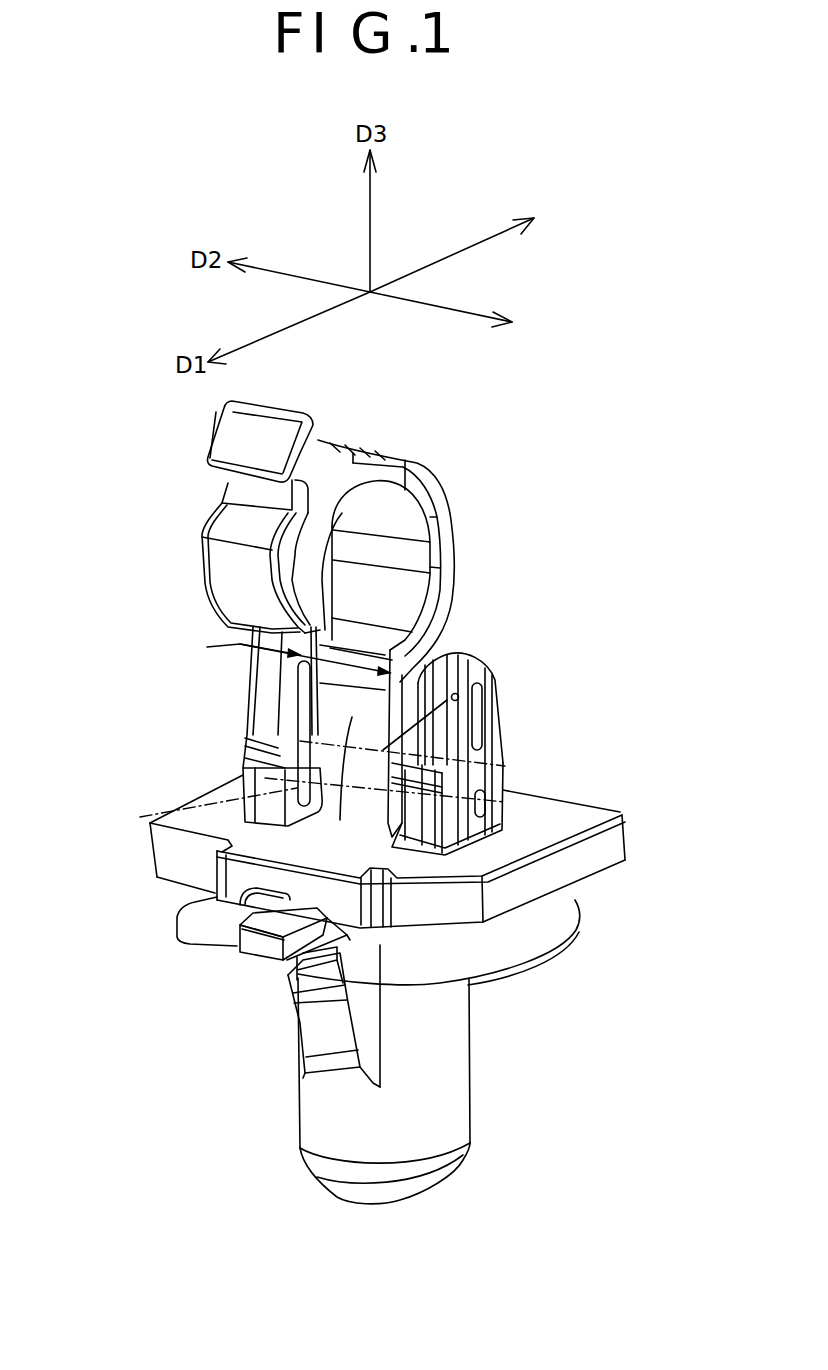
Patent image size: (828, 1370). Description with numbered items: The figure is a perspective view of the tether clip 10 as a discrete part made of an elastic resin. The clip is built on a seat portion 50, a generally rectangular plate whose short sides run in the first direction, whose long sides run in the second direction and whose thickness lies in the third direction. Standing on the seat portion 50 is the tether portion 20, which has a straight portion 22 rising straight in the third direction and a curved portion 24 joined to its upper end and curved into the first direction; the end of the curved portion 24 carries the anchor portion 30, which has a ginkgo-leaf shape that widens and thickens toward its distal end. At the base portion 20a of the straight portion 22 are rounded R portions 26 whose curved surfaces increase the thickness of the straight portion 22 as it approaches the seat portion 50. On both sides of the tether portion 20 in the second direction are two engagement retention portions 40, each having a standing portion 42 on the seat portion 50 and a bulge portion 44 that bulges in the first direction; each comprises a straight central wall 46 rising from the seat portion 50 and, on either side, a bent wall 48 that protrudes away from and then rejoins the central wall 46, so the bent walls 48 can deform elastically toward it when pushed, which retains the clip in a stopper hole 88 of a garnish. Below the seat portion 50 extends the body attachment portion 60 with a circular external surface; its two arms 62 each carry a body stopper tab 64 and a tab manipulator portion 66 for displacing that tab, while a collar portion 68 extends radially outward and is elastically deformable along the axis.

The tether clip 10 is at (475, 509).
The tether portion 20 is at (558, 597).
The base portion 20a is at (190, 880).
The straight portion 22 is at (352, 717).
The curved portion 24 is at (390, 592).
The rounded portion (R portion) 26 is at (427, 720).
The anchor portion 30 is at (237, 437).
The engagement retention portion 40 is at (167, 703).
The standing portion 42 is at (270, 783).
The bulge portion 44 is at (242, 724).
The central wall 46 is at (505, 814).
The bent wall 48 is at (440, 822).
The seat portion 50 is at (577, 817).
The body attachment portion 60 is at (305, 1130).
The arm 62 is at (322, 1046).
The body stopper tab 64 is at (297, 990).
The tab manipulator portion 66 is at (257, 950).
The collar portion 68 is at (527, 965).
The stopper hole 88 is at (140, 816).